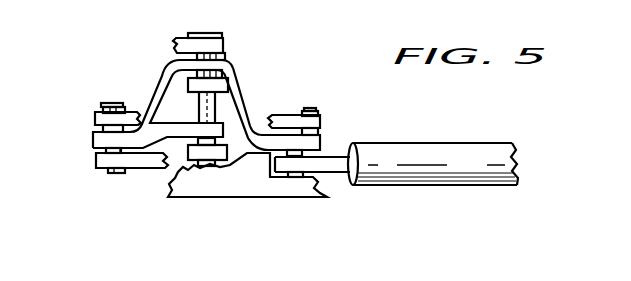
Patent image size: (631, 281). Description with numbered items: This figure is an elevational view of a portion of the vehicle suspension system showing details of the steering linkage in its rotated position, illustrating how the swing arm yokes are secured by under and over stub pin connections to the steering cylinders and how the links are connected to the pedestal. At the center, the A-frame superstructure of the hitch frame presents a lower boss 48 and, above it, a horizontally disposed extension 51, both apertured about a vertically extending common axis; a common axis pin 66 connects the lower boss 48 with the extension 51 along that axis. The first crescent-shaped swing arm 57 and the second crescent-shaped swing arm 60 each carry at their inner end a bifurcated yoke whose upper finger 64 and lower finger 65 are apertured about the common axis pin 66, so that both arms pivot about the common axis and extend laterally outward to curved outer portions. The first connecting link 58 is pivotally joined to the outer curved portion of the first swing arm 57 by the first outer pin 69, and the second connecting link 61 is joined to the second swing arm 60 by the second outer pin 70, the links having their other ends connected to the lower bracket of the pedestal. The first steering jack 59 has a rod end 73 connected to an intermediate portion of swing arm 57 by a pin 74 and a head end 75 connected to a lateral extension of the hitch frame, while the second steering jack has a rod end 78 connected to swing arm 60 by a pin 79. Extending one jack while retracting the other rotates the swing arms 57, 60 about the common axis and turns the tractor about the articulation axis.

The lower boss 48 is at (193, 200).
The horizontally disposed extension 51 is at (178, 38).
The first crescent-shaped swing arm 57 is at (256, 103).
The first connecting link 58 is at (287, 115).
The first steering jack 59 is at (388, 184).
The second crescent-shaped swing arm 60 is at (159, 80).
The second connecting link 61 is at (93, 118).
The upper finger 64 is at (242, 79).
The lower finger 65 is at (232, 166).
The common axis pin 66 is at (197, 102).
The first outer pin 69 is at (310, 111).
The second outer pin 70 is at (111, 104).
The rod end 73 is at (333, 155).
The pin 74 is at (294, 178).
The head end 75 is at (474, 118).
The rod end 78 is at (150, 170).
The pin 79 is at (113, 174).